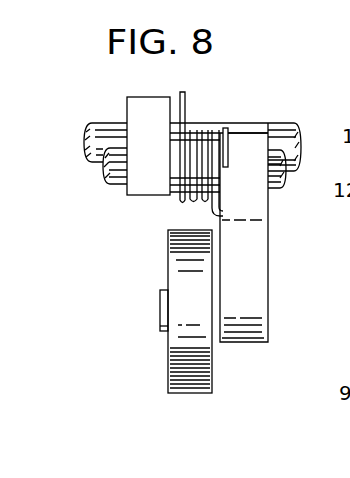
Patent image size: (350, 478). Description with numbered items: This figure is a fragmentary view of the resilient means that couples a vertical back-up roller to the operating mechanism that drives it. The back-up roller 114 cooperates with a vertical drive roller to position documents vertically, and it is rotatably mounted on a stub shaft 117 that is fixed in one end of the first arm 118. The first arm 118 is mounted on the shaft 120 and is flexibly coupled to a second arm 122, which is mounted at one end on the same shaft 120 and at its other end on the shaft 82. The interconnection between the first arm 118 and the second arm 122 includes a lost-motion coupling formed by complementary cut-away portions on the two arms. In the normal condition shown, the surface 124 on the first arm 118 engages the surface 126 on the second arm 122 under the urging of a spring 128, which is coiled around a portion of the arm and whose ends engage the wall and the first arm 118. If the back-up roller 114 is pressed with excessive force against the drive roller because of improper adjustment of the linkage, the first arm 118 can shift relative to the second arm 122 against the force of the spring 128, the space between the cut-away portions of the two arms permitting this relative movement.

The shaft 82 is at (97, 124).
The shaft 120 is at (107, 170).
The second arm 122 is at (143, 196).
The spring 128 is at (186, 93).
The surface 126 is at (226, 138).
The surface 124 is at (227, 150).
The first arm 118 is at (250, 279).
The back-up roller 114 is at (170, 372).
The stub shaft 117 is at (160, 305).